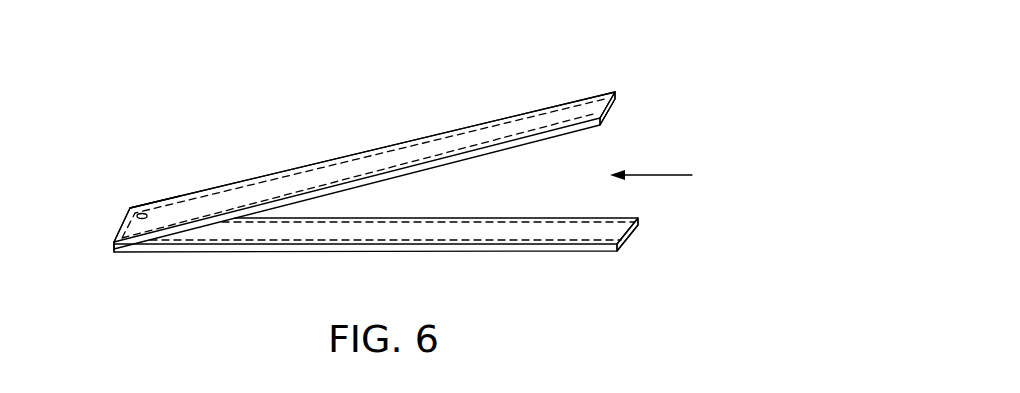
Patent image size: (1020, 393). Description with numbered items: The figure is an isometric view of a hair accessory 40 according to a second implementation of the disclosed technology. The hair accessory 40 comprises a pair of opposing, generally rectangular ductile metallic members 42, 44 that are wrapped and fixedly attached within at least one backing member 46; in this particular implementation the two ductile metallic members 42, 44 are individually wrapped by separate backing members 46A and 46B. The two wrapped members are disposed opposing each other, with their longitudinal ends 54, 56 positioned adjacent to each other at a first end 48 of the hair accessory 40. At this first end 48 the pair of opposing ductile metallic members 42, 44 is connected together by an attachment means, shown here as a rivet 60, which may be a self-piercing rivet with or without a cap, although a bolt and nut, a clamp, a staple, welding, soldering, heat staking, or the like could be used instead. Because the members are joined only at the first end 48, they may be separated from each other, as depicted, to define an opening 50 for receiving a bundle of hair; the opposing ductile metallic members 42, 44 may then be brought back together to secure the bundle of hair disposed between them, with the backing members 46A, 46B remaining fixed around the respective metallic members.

The hair accessory 40 is at (113, 75).
The ductile metallic member 42 is at (406, 154).
The ductile metallic member 44 is at (575, 230).
The backing member 46 is at (252, 180).
The backing member 46A is at (607, 92).
The backing member 46B is at (628, 238).
The first end 48 is at (123, 208).
The opening 50 is at (665, 176).
The longitudinal end 54 is at (138, 193).
The longitudinal end 56 is at (130, 262).
The rivet 60 is at (142, 216).